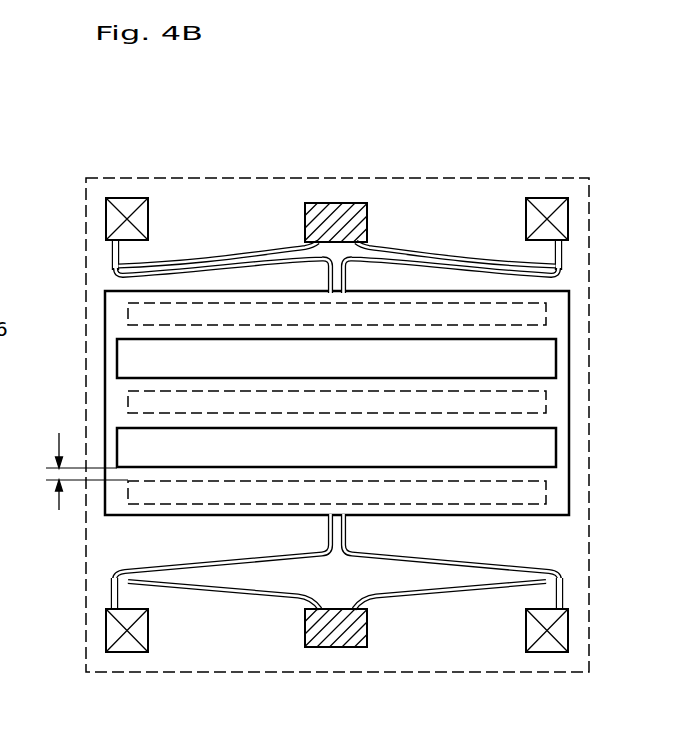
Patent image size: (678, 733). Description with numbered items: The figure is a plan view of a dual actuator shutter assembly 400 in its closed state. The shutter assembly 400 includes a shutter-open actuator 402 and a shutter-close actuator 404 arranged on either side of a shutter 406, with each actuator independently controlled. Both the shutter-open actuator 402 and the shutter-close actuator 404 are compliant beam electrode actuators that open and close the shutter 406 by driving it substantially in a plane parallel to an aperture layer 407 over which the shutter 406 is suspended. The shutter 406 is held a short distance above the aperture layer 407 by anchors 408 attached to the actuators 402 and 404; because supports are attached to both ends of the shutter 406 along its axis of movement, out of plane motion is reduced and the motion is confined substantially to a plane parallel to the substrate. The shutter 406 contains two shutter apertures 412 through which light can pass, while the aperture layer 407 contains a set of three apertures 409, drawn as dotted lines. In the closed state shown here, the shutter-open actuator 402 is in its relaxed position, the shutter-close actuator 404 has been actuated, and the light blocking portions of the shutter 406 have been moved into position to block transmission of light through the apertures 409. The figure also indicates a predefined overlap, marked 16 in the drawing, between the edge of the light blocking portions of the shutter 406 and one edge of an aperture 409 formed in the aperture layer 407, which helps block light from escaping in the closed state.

The shutter assembly 400 is at (279, 127).
The shutter-open actuator 402 is at (75, 538).
The shutter-close actuator 404 is at (75, 242).
The shutter 406 is at (563, 312).
The aperture layer 407 is at (444, 214).
The anchors 408 is at (121, 201).
The apertures 409 is at (346, 414).
The shutter apertures 412 is at (118, 428).
The gap dimension 16 is at (46, 475).